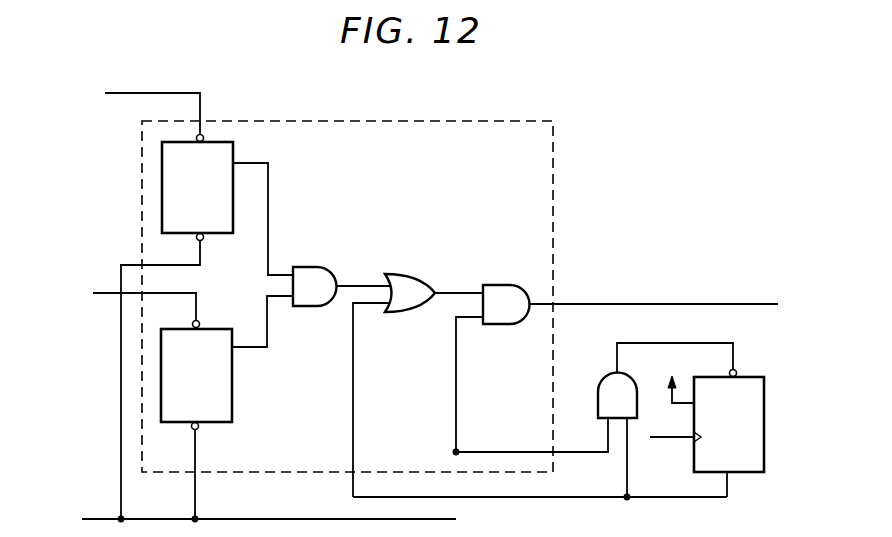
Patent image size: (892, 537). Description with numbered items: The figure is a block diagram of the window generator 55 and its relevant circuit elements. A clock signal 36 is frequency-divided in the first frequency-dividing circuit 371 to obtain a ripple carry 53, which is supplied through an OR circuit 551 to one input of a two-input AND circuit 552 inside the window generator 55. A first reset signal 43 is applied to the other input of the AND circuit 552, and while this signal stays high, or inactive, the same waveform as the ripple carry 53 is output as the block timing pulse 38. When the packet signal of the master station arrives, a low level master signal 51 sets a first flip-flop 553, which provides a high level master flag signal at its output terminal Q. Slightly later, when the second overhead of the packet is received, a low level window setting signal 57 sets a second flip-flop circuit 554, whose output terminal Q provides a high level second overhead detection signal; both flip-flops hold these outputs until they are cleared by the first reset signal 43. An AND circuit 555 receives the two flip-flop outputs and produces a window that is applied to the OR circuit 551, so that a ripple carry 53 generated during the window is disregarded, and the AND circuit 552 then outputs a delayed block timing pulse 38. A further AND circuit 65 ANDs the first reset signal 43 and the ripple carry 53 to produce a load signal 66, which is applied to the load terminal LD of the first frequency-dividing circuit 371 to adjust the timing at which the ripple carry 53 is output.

The master signal 51 is at (150, 93).
The first flip-flop 553 is at (233, 150).
The second flip-flop circuit 554 is at (232, 393).
The window generator 55 is at (554, 182).
The window setting signal 57 is at (103, 293).
The AND circuit 555 is at (310, 267).
The OR circuit 551 is at (400, 275).
The 2-input AND circuit 552 is at (495, 285).
The block timing pulse 38 is at (690, 304).
The load signal 66 is at (640, 343).
The AND circuit 65 is at (600, 378).
The first frequency-dividing circuit 371 is at (764, 412).
The clock signal 36 is at (665, 438).
The first reset signal 43 is at (93, 519).
The ripple carry 53 is at (660, 498).